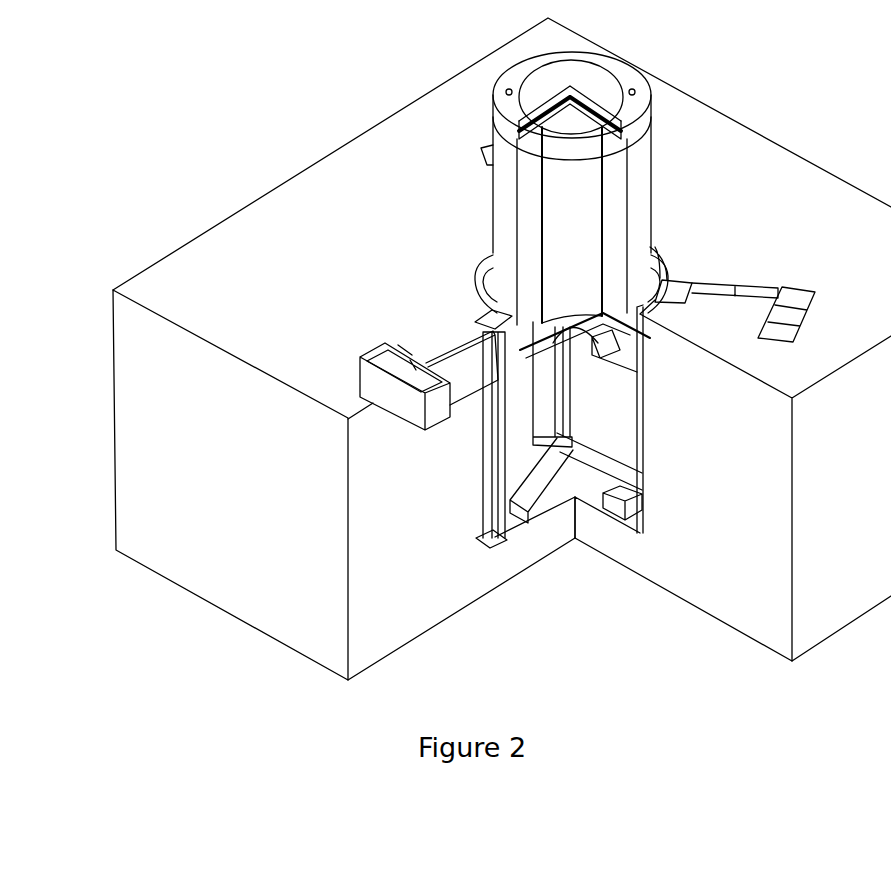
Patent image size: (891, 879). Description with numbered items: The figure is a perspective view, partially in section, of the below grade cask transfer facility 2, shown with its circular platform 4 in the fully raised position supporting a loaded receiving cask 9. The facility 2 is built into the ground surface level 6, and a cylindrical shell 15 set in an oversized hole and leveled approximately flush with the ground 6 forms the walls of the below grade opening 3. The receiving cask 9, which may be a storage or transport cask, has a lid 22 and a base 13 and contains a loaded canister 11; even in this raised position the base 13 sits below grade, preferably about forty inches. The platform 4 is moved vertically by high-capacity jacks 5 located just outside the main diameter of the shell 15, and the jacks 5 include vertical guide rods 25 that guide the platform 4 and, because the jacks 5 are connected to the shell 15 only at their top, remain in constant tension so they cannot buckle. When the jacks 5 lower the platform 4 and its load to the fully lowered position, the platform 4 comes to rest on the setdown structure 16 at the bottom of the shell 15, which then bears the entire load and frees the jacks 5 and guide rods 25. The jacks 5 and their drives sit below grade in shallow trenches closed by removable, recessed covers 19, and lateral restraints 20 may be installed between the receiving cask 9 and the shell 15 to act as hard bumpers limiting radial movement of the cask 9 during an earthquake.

The cask transfer facility 2 is at (455, 247).
The below grade opening 3 is at (525, 429).
The circular platform 4 is at (610, 375).
The jacks 5 is at (487, 317).
The ground surface level 6 is at (173, 270).
The receiving cask 9 is at (652, 165).
The loaded canister 11 is at (578, 195).
The base 13 is at (622, 362).
The shell 15 is at (665, 262).
The setdown structure 16 is at (528, 481).
The removable recessed covers 19 is at (377, 347).
The lateral restraints 20 is at (478, 270).
The lid 22 is at (625, 75).
The guide rods 25 is at (500, 500).